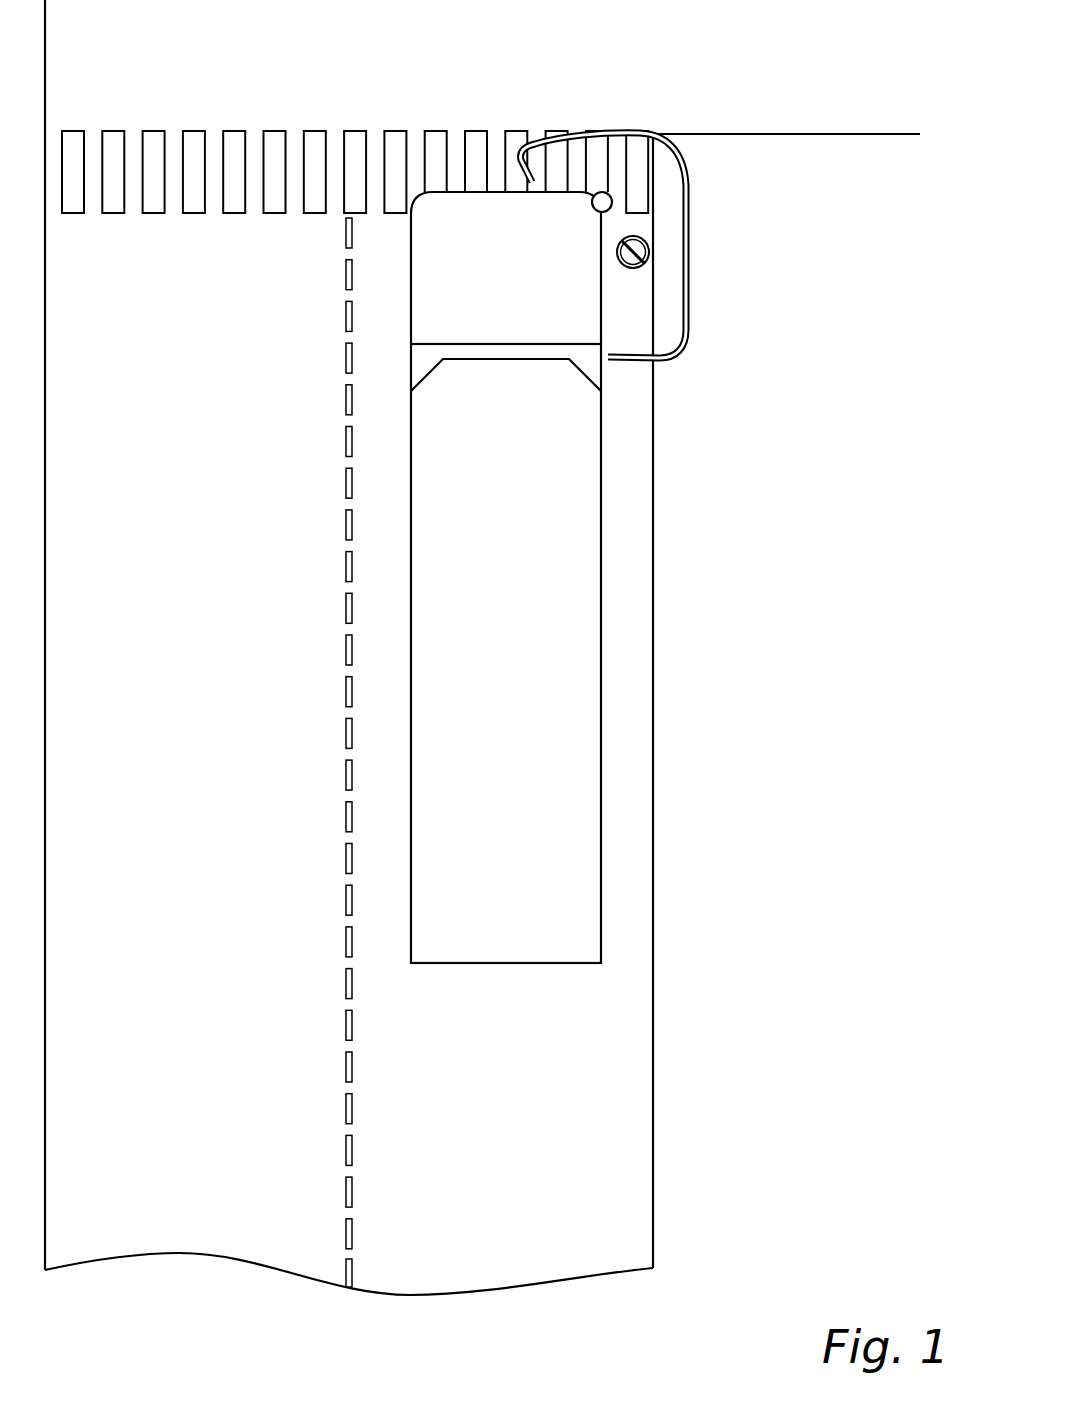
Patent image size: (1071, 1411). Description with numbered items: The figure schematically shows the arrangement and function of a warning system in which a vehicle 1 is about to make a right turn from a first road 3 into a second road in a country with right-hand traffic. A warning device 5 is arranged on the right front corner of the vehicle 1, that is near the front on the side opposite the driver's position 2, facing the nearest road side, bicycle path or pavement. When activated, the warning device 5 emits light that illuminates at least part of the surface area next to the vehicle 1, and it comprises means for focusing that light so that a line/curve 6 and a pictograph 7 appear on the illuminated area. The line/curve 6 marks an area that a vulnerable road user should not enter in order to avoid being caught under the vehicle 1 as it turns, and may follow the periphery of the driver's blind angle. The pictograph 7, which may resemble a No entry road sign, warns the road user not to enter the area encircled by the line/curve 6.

The vehicle 1 is at (443, 518).
The driver's position 2 is at (440, 289).
The first road 3 is at (570, 1092).
The warning device 5 is at (608, 197).
The line/curve 6 is at (680, 343).
The pictograph 7 is at (648, 250).